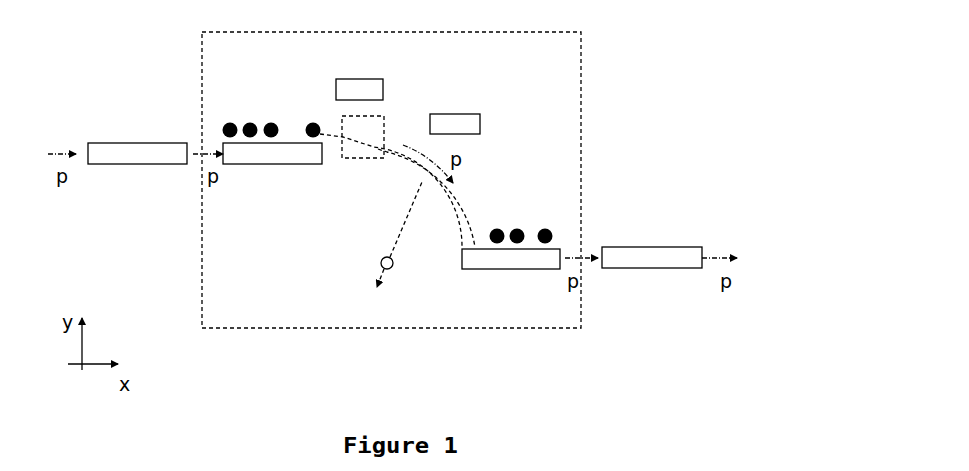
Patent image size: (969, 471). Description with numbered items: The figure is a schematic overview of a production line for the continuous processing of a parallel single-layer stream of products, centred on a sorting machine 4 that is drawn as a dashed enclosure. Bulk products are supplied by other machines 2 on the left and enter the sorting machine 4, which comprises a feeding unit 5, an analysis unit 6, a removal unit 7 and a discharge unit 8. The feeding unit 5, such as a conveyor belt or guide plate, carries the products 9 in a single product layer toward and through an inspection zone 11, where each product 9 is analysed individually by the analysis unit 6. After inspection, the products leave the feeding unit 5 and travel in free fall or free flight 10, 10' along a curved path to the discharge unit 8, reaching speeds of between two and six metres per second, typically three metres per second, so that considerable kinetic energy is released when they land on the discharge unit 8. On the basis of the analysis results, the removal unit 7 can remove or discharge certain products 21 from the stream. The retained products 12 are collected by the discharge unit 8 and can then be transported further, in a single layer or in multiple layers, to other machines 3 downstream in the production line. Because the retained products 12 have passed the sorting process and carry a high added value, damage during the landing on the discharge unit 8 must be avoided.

The other machines 2 is at (104, 164).
The other machines 3 is at (623, 268).
The sorting machine 4 is at (588, 28).
The feeding unit 5 is at (237, 164).
The analysis unit 6 is at (380, 79).
The removal unit 7 is at (473, 114).
The discharge unit 8 is at (482, 269).
The products 9 is at (252, 122).
The free fall or free flight 10 is at (391, 194).
The free fall or free flight 10' is at (449, 198).
The inspection zone 11 is at (350, 160).
The retained products 12 is at (517, 228).
The removed or discharged products 21 is at (393, 270).